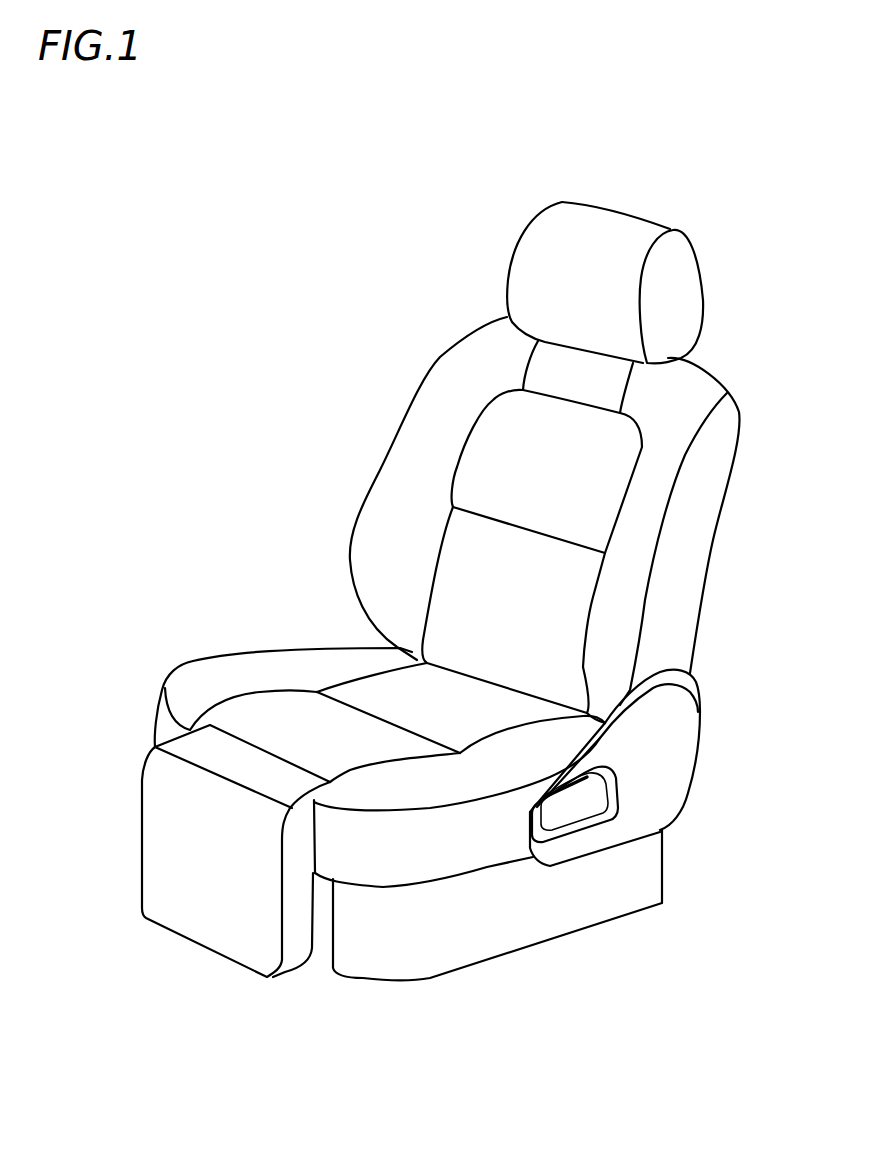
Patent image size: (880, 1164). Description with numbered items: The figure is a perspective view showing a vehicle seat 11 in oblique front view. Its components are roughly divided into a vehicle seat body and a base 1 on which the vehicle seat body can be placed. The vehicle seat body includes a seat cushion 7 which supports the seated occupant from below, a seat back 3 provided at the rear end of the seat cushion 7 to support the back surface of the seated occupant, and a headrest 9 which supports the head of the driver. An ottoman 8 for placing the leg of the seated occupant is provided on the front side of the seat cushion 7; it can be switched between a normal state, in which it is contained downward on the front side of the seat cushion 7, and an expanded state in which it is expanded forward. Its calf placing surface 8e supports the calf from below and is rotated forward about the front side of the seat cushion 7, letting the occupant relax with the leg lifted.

The vehicle seat 11 is at (694, 128).
The headrest 9 is at (678, 282).
The seat back 3 is at (693, 555).
The seat cushion 7 is at (242, 677).
The ottoman 8 is at (148, 761).
The calf placing surface 8e is at (173, 837).
The base 1 is at (663, 863).